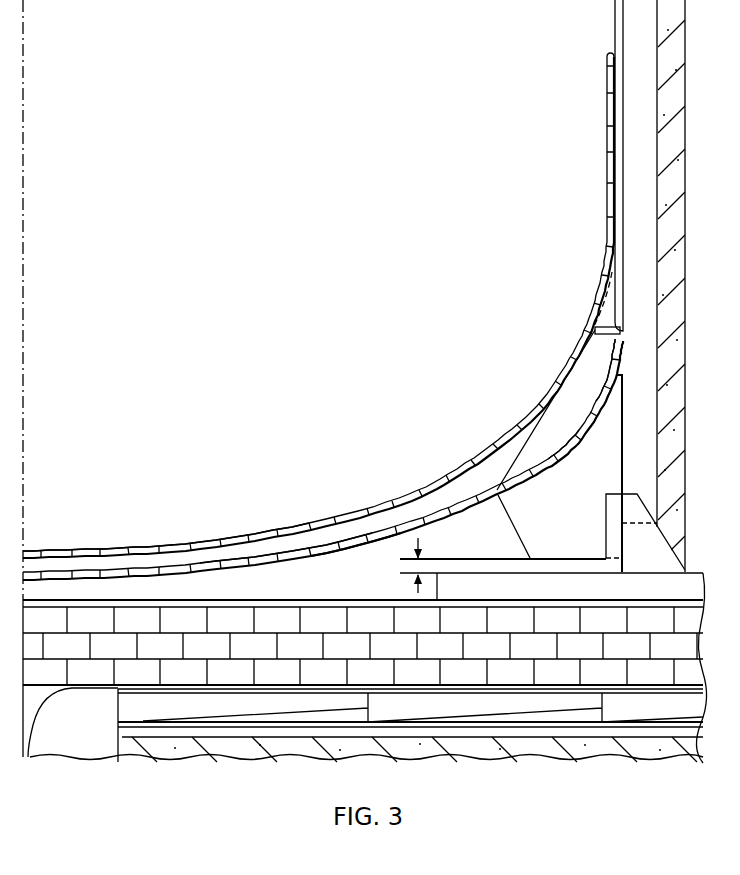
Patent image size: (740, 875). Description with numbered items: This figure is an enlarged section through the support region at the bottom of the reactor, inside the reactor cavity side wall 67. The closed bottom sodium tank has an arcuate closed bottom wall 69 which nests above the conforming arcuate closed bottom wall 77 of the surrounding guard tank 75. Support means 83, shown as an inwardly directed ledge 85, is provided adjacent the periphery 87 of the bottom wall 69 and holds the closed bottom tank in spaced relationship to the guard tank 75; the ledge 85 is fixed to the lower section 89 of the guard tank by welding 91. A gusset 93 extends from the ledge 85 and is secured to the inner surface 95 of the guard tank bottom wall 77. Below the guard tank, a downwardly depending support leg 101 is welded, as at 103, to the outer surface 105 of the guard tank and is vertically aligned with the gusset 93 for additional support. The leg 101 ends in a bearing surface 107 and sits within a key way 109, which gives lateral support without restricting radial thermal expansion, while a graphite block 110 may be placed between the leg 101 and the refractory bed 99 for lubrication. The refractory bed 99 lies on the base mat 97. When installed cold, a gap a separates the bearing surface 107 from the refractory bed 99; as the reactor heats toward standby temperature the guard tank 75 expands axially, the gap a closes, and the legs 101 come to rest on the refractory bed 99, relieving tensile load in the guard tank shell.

The reactor cavity side wall 67 is at (665, 193).
The arcuate closed bottom wall 69 is at (192, 541).
The guard tank 75 is at (360, 551).
The arcuate closed bottom wall 77 is at (300, 553).
The support means 83 is at (576, 317).
The inwardly directed ledge 85 is at (618, 310).
The periphery 87 is at (455, 443).
The lower section 89 is at (631, 358).
The welding 91 is at (614, 339).
The gusset 93 is at (553, 403).
The inner surface 95 is at (606, 396).
The base mat 97 is at (152, 708).
The refractory bed 99 is at (95, 672).
The support legs 101 is at (571, 522).
The weld 103 is at (568, 448).
The outer surface 105 is at (520, 494).
The bearing surface 107 is at (582, 565).
The key way 109 is at (662, 518).
The graphite blocks 110 is at (688, 585).
The gap a is at (416, 587).